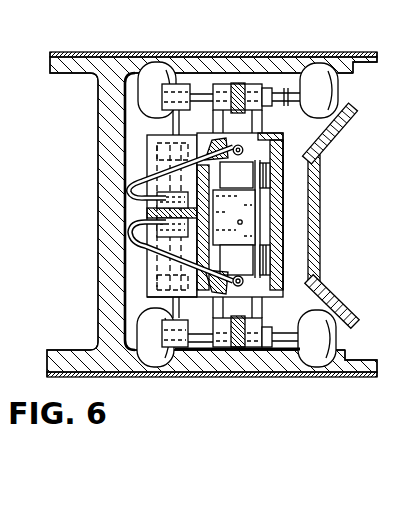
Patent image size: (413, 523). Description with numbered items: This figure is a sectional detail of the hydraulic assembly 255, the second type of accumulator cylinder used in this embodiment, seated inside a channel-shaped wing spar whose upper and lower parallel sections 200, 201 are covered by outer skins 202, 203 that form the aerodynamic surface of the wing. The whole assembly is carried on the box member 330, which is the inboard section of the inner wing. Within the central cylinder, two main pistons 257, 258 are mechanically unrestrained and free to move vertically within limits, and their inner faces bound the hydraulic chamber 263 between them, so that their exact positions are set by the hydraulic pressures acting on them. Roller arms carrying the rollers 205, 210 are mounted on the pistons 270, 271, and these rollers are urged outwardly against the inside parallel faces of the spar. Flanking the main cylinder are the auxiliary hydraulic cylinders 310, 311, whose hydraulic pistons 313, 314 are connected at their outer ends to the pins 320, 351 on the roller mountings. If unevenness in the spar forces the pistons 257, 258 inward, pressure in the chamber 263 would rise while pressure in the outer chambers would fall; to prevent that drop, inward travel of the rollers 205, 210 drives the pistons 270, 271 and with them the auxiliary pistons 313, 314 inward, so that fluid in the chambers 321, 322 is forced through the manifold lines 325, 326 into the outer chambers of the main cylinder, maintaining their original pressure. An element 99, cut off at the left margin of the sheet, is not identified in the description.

The housing 99 is at (188, 214).
The upper parallel section 200 is at (268, 56).
The lower parallel section 201 is at (258, 360).
The outer skin 202 is at (182, 57).
The outer skin 203 is at (317, 376).
The roller 205 is at (340, 90).
The roller 210 is at (134, 330).
The hydraulic assembly 255 is at (285, 228).
The main piston 257 is at (283, 176).
The main piston 258 is at (270, 252).
The hydraulic chamber 263 is at (290, 206).
The piston 270 is at (259, 121).
The piston 271 is at (259, 301).
The auxiliary hydraulic cylinder 310 is at (147, 145).
The auxiliary hydraulic cylinder 311 is at (147, 290).
The hydraulic piston 313 is at (179, 113).
The hydraulic piston 314 is at (170, 305).
The pin 320 is at (201, 92).
The chamber 321 is at (127, 201).
The chamber 322 is at (127, 233).
The manifold line 325 is at (236, 175).
The manifold line 326 is at (258, 271).
The box member 330 is at (347, 136).
The pin 351 is at (216, 352).